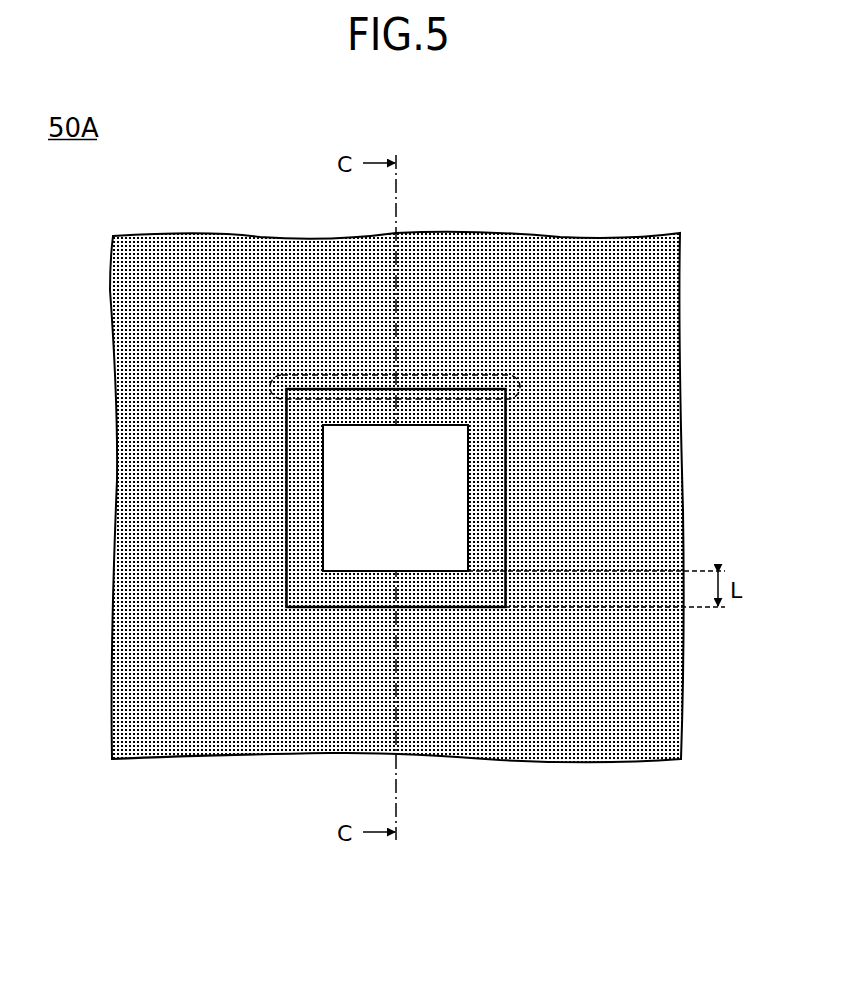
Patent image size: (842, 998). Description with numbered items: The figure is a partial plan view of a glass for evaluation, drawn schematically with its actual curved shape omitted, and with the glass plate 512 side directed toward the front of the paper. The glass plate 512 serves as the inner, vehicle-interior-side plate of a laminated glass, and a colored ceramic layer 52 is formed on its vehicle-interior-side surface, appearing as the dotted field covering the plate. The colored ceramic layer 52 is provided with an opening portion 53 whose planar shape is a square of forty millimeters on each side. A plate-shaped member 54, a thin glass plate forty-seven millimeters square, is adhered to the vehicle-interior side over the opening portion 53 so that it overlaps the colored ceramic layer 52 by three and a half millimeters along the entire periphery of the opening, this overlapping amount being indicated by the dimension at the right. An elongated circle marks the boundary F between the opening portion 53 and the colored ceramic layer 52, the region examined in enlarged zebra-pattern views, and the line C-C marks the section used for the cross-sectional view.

The colored ceramic layer 52 is at (397, 536).
The opening portion 53 is at (350, 558).
The plate-shaped member 54 is at (450, 590).
The glass plate 512 is at (640, 732).
The boundary F is at (433, 375).